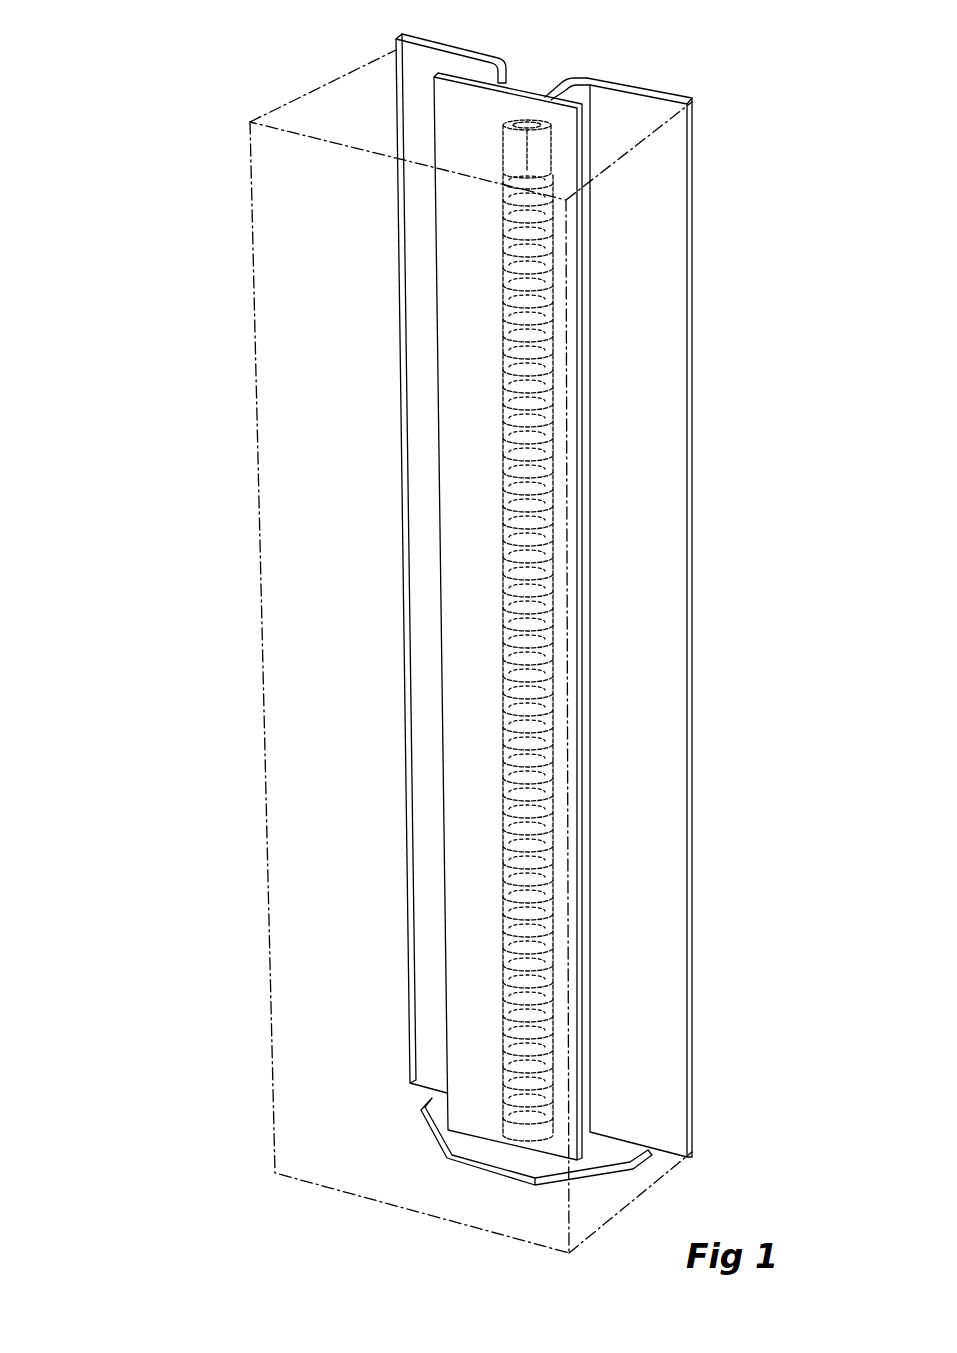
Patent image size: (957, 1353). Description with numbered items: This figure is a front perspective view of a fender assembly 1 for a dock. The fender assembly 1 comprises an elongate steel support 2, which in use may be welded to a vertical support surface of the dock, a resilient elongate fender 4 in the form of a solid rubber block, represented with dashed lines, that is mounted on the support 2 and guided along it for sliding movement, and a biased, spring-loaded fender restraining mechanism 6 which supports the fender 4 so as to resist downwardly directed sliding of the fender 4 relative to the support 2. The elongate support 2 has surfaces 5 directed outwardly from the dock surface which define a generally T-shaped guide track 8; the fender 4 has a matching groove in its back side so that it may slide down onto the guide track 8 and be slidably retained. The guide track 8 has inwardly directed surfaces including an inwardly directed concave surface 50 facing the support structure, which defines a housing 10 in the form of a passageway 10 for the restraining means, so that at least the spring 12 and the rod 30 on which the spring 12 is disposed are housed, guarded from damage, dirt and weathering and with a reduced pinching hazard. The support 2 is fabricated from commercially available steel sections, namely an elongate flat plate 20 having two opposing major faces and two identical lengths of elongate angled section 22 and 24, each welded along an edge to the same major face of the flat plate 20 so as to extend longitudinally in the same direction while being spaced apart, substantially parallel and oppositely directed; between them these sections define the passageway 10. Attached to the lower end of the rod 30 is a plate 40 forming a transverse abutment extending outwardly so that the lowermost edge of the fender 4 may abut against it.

The fender assembly 1 is at (174, 72).
The elongate steel support 2 is at (703, 219).
The resilient elongate fender 4 is at (250, 226).
The outwardly directed surfaces 5 is at (616, 348).
The biased fender restraining mechanism 6 is at (476, 1176).
The guide track 8 is at (426, 595).
The housing (passageway) 10 is at (728, 56).
The spring 12 is at (537, 443).
The flat plate 20 is at (453, 117).
The angled section 22 is at (485, 55).
The angled section 24 is at (634, 82).
The rod 30 is at (537, 558).
The plate 40 is at (475, 1152).
The inwardly directed concave surface 50 is at (531, 82).